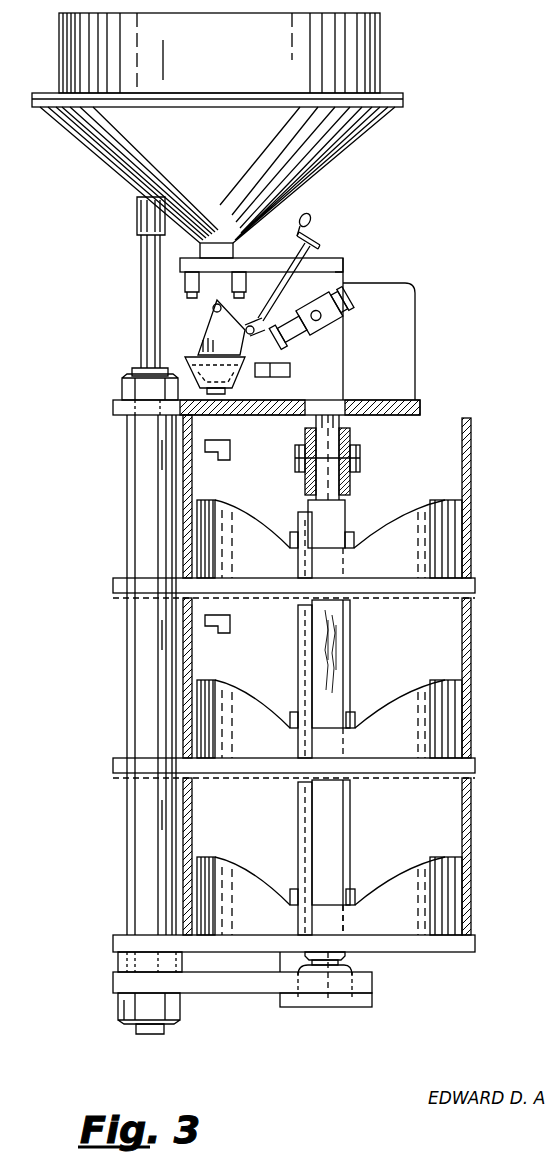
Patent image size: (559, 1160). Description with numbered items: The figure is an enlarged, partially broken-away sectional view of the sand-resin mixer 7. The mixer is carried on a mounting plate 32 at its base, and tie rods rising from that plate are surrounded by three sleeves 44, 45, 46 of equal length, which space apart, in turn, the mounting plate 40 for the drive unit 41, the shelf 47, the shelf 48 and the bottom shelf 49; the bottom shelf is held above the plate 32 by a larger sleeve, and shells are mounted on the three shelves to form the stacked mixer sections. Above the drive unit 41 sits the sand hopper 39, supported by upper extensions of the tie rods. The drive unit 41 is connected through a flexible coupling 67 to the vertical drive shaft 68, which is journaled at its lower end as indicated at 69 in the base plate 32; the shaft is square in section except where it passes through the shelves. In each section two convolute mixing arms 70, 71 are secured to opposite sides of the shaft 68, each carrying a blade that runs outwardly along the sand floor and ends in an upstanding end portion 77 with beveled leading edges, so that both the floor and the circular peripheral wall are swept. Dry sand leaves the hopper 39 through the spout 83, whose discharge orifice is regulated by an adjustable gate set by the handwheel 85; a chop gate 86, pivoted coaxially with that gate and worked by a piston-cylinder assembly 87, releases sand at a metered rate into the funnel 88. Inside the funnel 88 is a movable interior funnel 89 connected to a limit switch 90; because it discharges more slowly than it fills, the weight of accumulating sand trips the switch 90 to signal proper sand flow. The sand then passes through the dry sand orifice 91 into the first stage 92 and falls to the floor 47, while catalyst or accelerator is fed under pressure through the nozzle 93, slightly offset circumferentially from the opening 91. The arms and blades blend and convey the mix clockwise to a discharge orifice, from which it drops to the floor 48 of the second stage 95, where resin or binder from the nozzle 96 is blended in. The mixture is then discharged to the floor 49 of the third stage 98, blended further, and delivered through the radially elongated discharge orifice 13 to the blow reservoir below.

The mixer 7 is at (466, 404).
The discharge orifice 13 is at (430, 952).
The mounting plate 32 is at (120, 980).
The sand hopper 39 is at (345, 140).
The mounting plate 40 is at (415, 405).
The drive unit 41 is at (408, 340).
The sleeve 44 is at (137, 470).
The sleeve 45 is at (135, 655).
The sleeve 46 is at (135, 822).
The shelf 47 is at (478, 582).
The shelf 48 is at (478, 765).
The bottom shelf 49 is at (476, 946).
The flexible coupling 67 is at (370, 462).
The drive shaft 68 is at (340, 705).
The journal 69 is at (328, 985).
The mixing arm 70 is at (215, 695).
The mixing arm 71 is at (448, 716).
The upstanding end portion 77 is at (350, 645).
The spout 83 is at (215, 246).
The handwheel 85 is at (315, 235).
The chop gate 86 is at (205, 322).
The piston-cylinder assembly 87 is at (345, 318).
The funnel 88 is at (245, 360).
The interior funnel 89 is at (230, 391).
The limit switch 90 is at (292, 372).
The dry sand orifice 91 is at (225, 410).
The first stage 92 is at (484, 497).
The nozzle 93 is at (232, 452).
The second stage 95 is at (484, 654).
The nozzle 96 is at (232, 628).
The third stage 98 is at (484, 837).